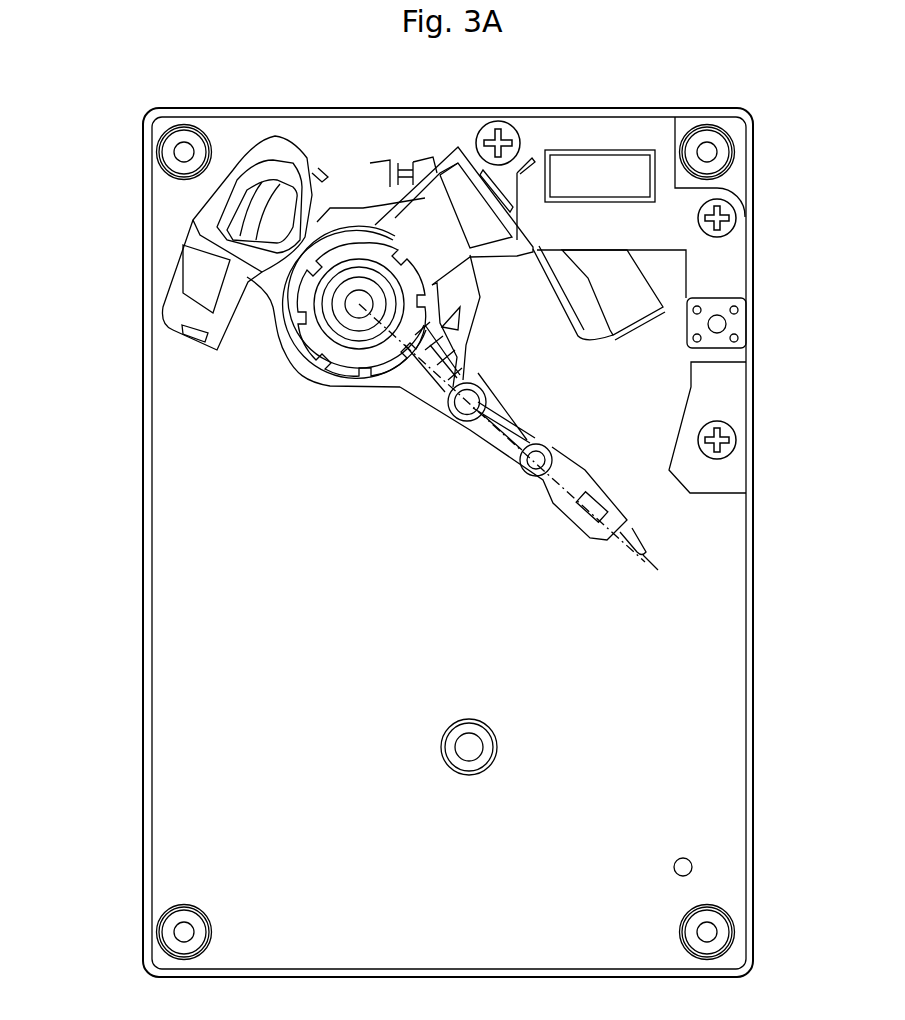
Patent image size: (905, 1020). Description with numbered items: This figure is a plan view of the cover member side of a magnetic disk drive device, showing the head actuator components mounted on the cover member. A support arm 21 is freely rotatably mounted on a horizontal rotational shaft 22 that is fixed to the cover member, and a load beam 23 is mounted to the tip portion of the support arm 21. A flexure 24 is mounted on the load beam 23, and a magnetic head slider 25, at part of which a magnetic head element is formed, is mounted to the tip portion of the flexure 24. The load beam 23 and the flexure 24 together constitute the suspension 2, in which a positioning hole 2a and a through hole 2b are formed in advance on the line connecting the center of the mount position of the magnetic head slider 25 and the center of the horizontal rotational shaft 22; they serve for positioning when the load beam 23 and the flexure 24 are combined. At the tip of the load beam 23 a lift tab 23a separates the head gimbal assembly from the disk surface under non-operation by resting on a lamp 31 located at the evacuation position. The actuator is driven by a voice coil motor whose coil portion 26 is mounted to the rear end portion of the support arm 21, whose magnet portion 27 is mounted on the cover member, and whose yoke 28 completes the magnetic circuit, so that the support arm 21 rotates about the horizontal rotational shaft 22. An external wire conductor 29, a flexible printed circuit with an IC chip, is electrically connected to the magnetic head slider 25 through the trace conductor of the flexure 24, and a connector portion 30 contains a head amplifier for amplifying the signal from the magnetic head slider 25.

The suspension 2 is at (527, 480).
The positioning hole 2a is at (470, 387).
The through hole 2b is at (545, 447).
The support arm 21 is at (258, 275).
The horizontal rotational shaft 22 is at (357, 322).
The load beam 23 is at (507, 470).
The lift tab 23a is at (628, 557).
The flexure 24 is at (547, 503).
The magnetic head slider 25 is at (590, 525).
The coil portion 26 is at (217, 228).
The magnet portion 27 is at (197, 293).
The yoke 28 is at (193, 340).
The external wire conductor 29 is at (580, 330).
The connector portion 30 is at (590, 168).
The lamp 31 is at (717, 482).